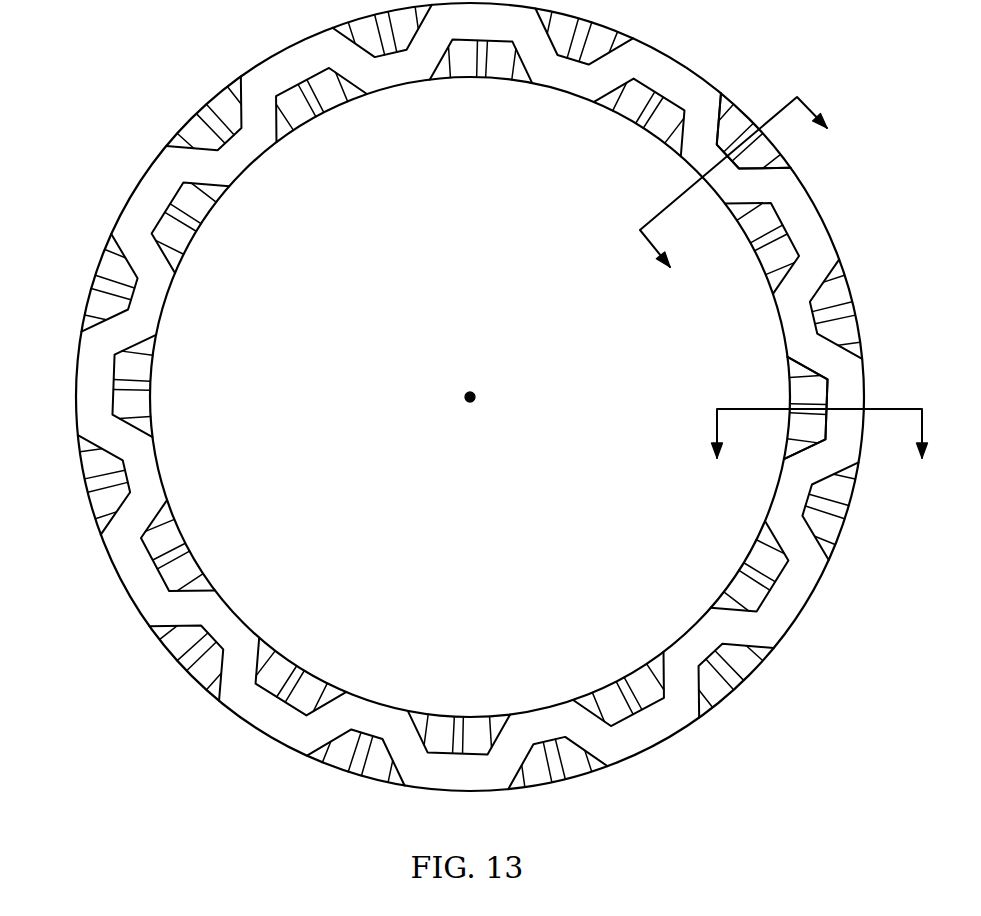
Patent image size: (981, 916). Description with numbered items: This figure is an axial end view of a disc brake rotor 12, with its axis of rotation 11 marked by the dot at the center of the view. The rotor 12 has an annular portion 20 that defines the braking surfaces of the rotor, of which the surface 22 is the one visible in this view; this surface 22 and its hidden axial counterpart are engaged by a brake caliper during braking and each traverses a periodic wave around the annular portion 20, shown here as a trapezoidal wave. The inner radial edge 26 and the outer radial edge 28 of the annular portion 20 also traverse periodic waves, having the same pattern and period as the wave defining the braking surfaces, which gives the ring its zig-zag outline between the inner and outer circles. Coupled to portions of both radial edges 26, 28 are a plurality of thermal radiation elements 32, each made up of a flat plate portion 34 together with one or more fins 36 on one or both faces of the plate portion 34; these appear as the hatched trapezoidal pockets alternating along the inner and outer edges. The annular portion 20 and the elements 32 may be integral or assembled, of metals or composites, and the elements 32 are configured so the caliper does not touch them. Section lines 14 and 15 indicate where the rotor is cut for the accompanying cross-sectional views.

The axis of rotation 11 is at (468, 387).
The disc brake rotor 12 is at (130, 118).
The section line 14- 14 is at (748, 198).
The section line 15- 15 is at (820, 452).
The annular portion 20 is at (165, 302).
The surface 22 is at (97, 405).
The inner radial edge 26 is at (333, 690).
The outer radial edge 28 is at (127, 483).
The thermal radiation element 32 is at (743, 90).
The flat plate portion 34 is at (742, 121).
The fin 36 is at (729, 109).